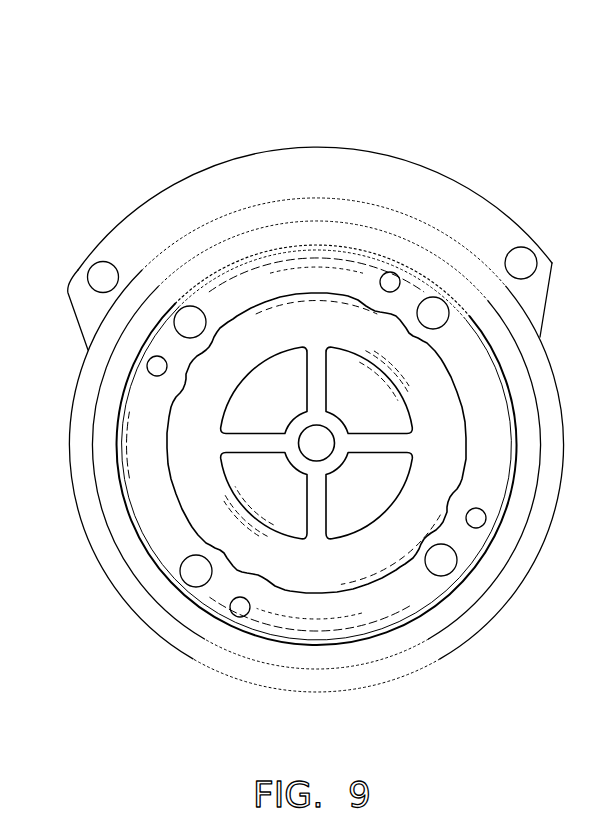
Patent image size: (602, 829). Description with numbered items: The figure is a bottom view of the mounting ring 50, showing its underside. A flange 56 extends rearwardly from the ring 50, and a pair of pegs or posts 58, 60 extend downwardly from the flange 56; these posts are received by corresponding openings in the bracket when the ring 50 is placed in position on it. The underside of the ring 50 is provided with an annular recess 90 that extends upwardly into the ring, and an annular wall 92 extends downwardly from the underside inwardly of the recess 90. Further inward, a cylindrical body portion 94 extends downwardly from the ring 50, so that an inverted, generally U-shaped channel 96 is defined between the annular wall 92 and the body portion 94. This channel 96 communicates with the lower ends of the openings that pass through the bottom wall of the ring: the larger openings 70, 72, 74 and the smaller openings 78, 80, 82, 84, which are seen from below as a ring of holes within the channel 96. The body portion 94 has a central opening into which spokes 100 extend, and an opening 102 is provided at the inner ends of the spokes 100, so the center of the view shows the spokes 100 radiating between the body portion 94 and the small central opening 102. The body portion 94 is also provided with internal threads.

The mounting ring 50 is at (288, 137).
The flange 56 is at (192, 192).
The peg or post 58 is at (80, 283).
The peg or post 60 is at (527, 258).
The larger opening 70 is at (185, 317).
The larger opening 72 is at (192, 583).
The larger opening 74 is at (447, 567).
The smaller opening 78 is at (153, 367).
The smaller opening 80 is at (238, 612).
The smaller opening 82 is at (482, 527).
The smaller opening 84 is at (388, 277).
The annular recess 90 is at (527, 467).
The annular wall 92 is at (520, 439).
The cylindrical body portion 94 is at (378, 580).
The inverted U-shaped channel 96 is at (328, 625).
The spokes 100 is at (373, 442).
The opening 102 is at (312, 448).